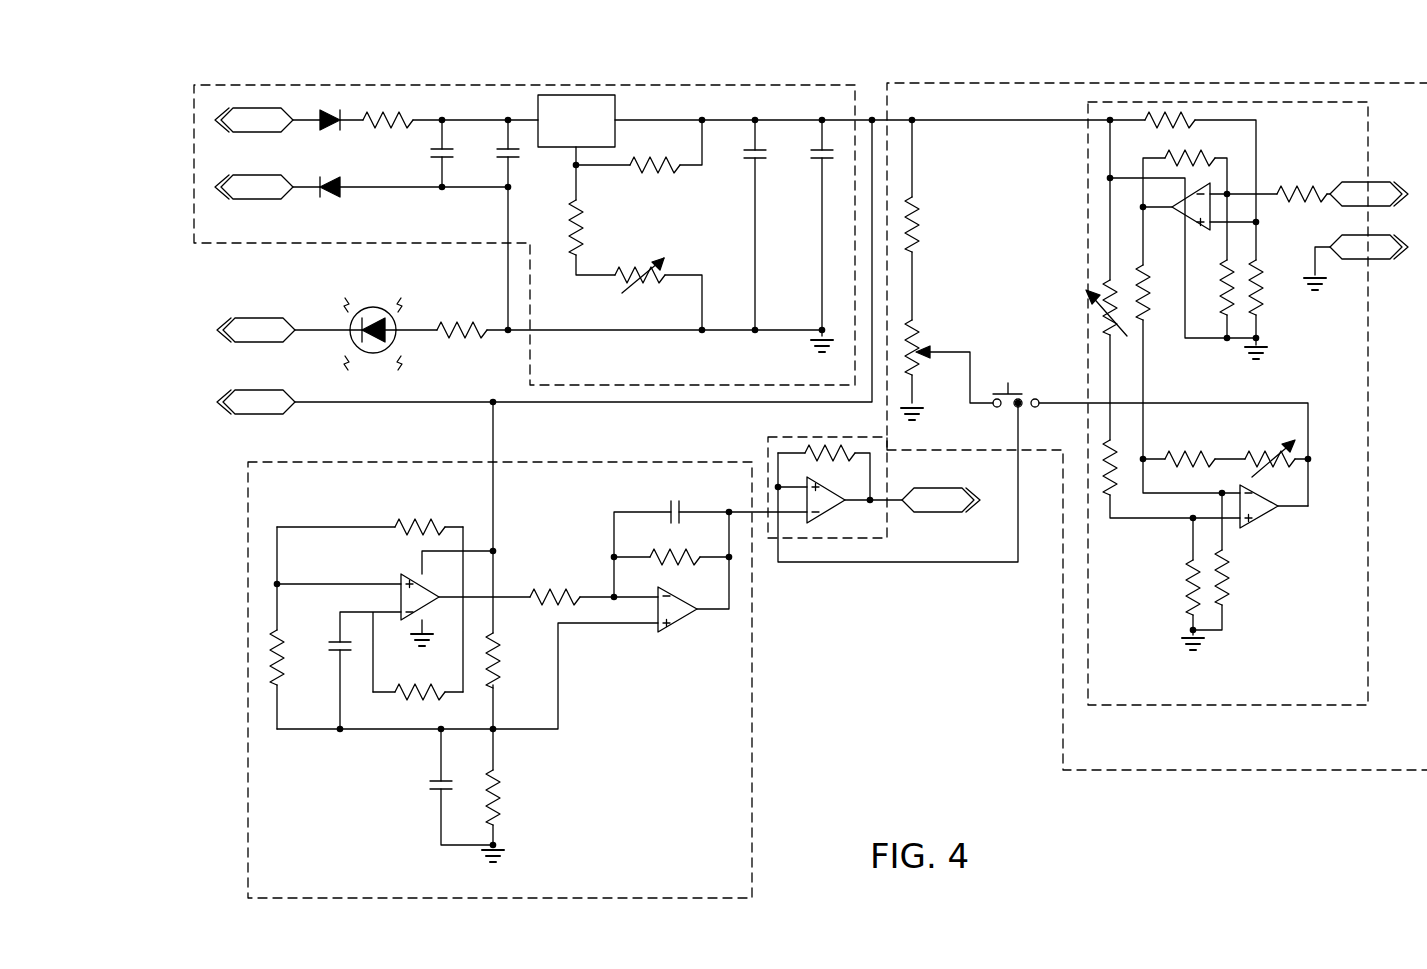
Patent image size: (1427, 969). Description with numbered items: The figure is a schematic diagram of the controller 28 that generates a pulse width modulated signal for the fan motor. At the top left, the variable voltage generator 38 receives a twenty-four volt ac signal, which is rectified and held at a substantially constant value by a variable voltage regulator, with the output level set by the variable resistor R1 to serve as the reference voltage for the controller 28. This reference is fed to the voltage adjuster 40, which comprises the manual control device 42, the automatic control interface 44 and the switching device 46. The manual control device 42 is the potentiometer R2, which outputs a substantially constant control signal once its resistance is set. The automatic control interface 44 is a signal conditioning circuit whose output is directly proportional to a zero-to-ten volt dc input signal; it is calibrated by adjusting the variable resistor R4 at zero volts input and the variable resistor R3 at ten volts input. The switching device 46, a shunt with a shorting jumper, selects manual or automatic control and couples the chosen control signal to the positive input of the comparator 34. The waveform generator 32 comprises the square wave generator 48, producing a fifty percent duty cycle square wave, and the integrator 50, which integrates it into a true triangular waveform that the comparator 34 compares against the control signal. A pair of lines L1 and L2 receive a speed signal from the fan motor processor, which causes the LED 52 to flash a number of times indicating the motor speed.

The controller 28 is at (236, 569).
The waveform generator 32 is at (697, 898).
The comparator 34 is at (875, 541).
The variable voltage generator 38 is at (810, 83).
The voltage adjuster 40 is at (1140, 83).
The manual control device 42 is at (928, 280).
The automatic control interface 44 is at (1088, 158).
The switching device 46 is at (1010, 386).
The square wave generator 48 is at (425, 513).
The integrator 50 is at (650, 655).
The LED 52 is at (373, 307).
The variable resistor R1 is at (627, 274).
The variable resistor R2 is at (918, 327).
The variable resistor R3 is at (1097, 294).
The variable resistor R4 is at (1256, 457).
The line L1 is at (218, 321).
The line L2 is at (218, 401).